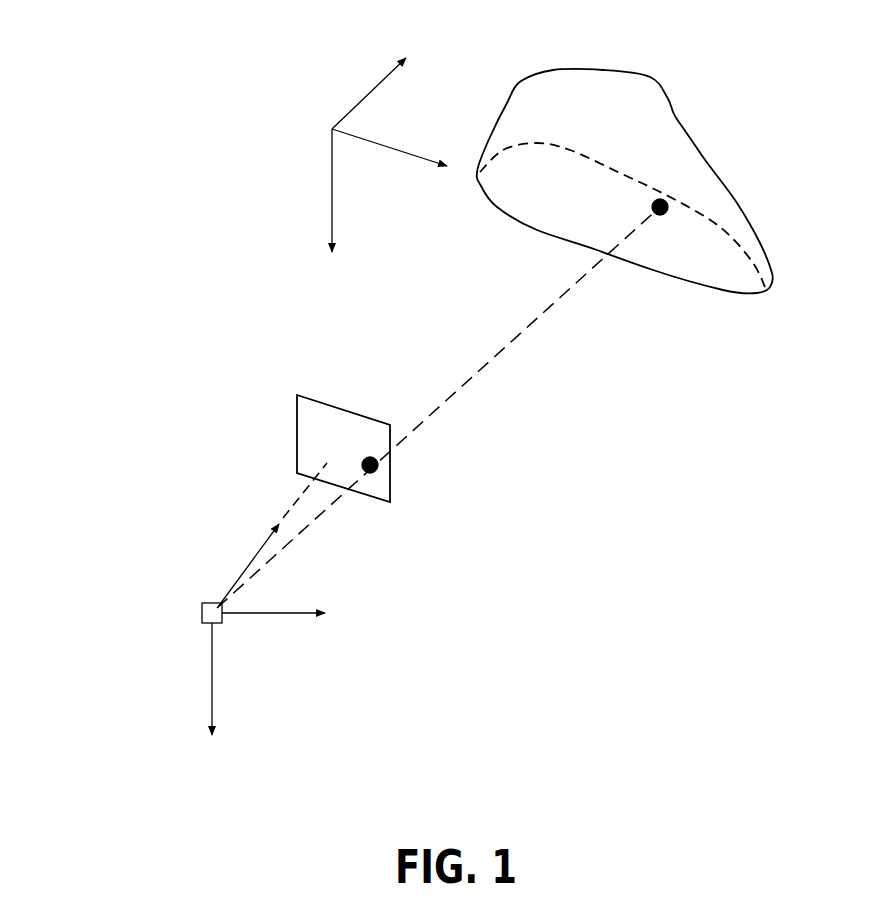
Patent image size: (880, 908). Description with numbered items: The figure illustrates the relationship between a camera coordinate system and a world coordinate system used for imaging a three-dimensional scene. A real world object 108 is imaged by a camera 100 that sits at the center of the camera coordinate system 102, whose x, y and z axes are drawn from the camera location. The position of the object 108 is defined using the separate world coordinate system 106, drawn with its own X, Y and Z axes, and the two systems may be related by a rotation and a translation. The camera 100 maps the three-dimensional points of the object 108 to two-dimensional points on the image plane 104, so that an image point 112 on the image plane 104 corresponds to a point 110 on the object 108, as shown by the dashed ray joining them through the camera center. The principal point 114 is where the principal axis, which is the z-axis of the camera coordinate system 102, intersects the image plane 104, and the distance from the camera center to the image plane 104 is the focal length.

The camera 100 is at (203, 625).
The camera coordinate system 102 is at (191, 638).
The image plane 104 is at (284, 419).
The world coordinate system 106 is at (316, 158).
The real world object 108 is at (650, 72).
The point of the object 110 is at (662, 215).
The image point 112 is at (376, 469).
The principal point 114 is at (327, 460).